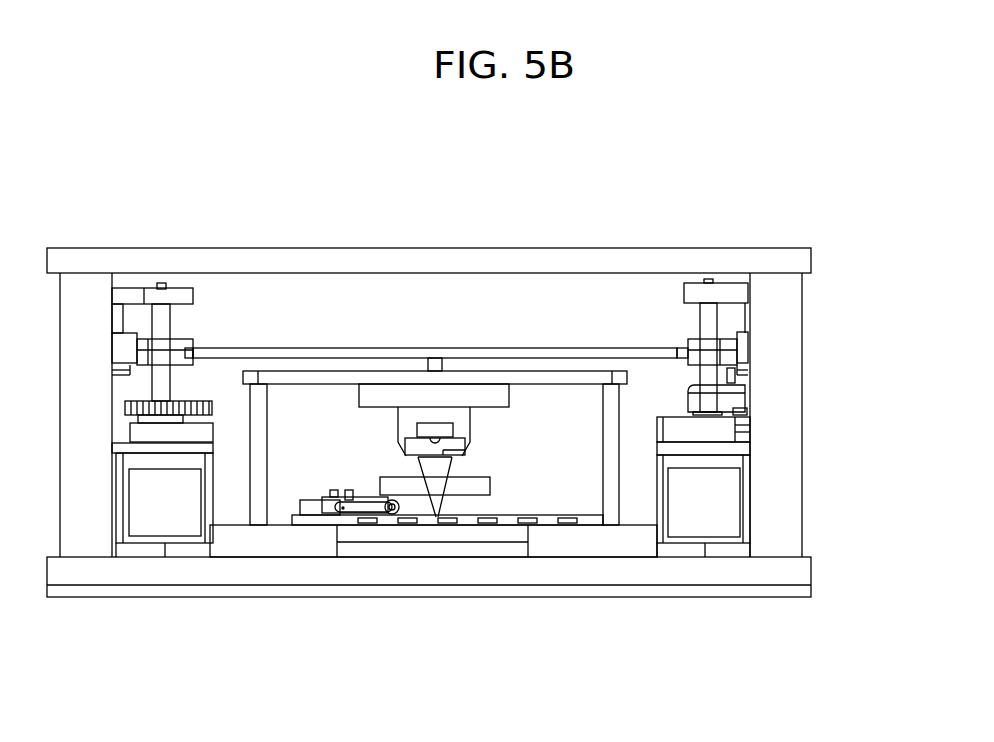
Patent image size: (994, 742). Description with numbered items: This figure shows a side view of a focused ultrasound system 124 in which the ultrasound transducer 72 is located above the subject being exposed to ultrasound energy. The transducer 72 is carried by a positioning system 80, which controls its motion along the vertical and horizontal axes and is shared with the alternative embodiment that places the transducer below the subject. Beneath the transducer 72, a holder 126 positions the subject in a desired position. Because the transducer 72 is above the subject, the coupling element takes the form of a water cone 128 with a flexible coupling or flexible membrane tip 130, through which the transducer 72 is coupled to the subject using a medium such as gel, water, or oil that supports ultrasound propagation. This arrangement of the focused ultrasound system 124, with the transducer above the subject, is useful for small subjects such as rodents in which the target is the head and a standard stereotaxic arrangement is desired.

The ultrasound transducer 72 is at (452, 414).
The positioning system 80 is at (833, 368).
The focused ultrasound system 124 is at (695, 148).
The holder 126 is at (492, 527).
The water cone 128 is at (432, 478).
The flexible membrane tip 130 is at (440, 515).